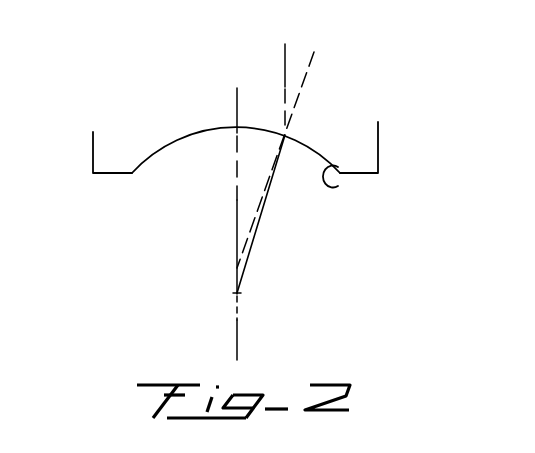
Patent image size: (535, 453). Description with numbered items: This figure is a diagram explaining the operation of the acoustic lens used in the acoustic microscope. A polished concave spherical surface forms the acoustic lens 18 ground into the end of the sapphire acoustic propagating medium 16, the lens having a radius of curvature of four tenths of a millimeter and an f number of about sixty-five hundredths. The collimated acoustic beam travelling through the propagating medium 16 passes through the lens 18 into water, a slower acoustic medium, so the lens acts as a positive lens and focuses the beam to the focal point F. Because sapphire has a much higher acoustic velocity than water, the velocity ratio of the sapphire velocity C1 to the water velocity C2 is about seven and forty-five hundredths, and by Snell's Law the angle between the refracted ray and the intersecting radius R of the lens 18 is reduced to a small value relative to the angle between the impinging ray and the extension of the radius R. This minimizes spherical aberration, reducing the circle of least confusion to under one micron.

The acoustic propagating medium 16 is at (378, 133).
The acoustic lens 18 is at (348, 184).
The radius of the lens R is at (268, 178).
The focal point F is at (237, 267).
The acoustic velocity of sapphire C1 is at (135, 128).
The acoustic velocity of water C2 is at (134, 200).